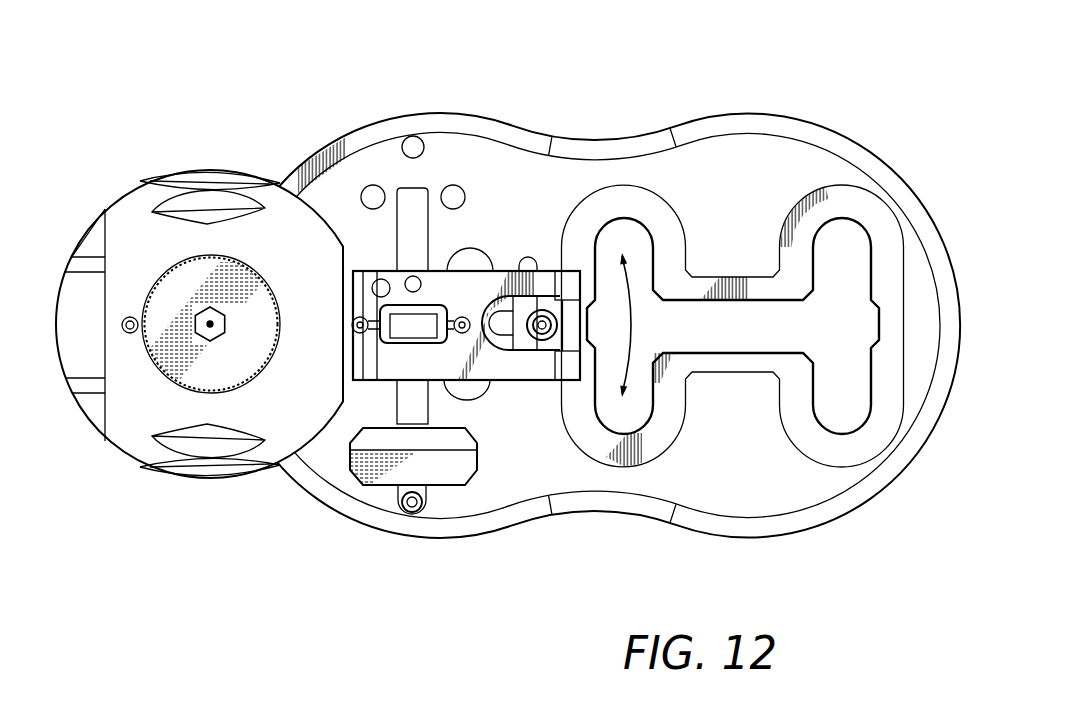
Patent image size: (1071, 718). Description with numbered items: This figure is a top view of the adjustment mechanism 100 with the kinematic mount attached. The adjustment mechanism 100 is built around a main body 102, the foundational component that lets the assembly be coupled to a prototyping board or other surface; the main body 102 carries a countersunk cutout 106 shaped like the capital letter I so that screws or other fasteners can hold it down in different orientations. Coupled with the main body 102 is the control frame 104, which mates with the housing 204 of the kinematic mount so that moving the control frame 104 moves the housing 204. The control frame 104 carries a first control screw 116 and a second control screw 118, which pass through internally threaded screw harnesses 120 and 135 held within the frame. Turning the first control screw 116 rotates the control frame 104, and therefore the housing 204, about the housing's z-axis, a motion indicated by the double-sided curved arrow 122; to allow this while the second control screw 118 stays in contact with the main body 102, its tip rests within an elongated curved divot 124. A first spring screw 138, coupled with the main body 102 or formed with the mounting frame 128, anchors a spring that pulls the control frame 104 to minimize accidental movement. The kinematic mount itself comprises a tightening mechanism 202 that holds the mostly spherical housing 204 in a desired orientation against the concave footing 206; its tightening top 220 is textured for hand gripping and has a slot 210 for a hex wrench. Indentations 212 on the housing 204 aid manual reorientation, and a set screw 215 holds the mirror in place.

The adjustment mechanism 100 is at (812, 56).
The main body 102 is at (720, 112).
The control frame 104 is at (443, 280).
The countersunk cutout 106 is at (840, 233).
The first control screw 116 is at (413, 190).
The second control screw 118 is at (543, 323).
The first screw harness 120 is at (403, 323).
The double-sided curved arrow 122 is at (637, 337).
The elongated curved divot 124 is at (526, 258).
The mounting frame 128 is at (447, 472).
The second screw harness 135 is at (525, 342).
The first spring screw 138 is at (407, 503).
The tightening mechanism 202 is at (160, 385).
The housing 204 is at (184, 484).
The footing 206 is at (90, 417).
The slot 210 is at (206, 328).
The indentations 212 is at (202, 208).
The set screw 215 is at (130, 320).
The tightening top 220 is at (174, 285).